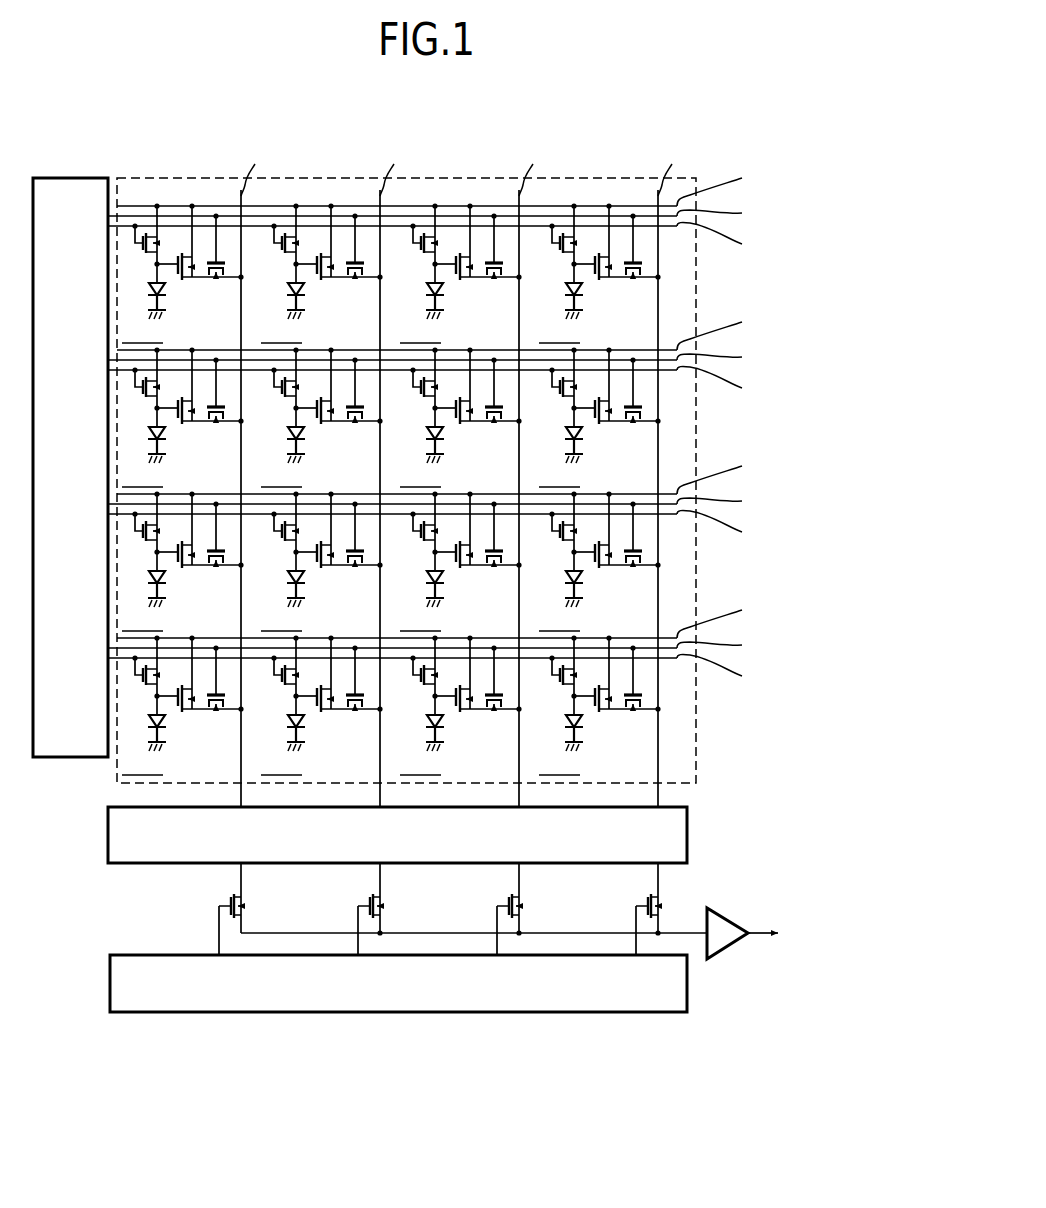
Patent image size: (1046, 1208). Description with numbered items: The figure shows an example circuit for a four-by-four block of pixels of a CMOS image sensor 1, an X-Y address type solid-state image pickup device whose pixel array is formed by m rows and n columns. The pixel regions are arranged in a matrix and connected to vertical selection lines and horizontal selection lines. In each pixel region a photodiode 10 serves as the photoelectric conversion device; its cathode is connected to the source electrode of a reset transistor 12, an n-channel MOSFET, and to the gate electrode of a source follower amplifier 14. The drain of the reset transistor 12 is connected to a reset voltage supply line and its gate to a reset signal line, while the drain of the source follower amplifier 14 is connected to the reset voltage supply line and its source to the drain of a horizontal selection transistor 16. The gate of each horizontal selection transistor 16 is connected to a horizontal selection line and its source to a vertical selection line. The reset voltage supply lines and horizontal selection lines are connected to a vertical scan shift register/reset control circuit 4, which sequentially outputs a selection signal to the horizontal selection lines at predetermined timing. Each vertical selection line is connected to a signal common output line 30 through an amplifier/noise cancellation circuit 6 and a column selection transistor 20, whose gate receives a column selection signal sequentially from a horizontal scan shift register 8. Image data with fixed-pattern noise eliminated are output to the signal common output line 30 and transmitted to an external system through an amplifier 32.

The CMOS image sensor 1 is at (453, 435).
The vertical scan shift register/reset control circuit 4 is at (80, 176).
The amplifier/noise cancellation circuit 6 is at (688, 834).
The horizontal scan shift register 8 is at (110, 979).
The photodiode 10 is at (183, 274).
The reset transistor 12 is at (147, 255).
The source follower amplifier 14 is at (187, 274).
The horizontal selection transistor 16 is at (218, 282).
The column selection transistor 20 is at (661, 903).
The signal common output line 30 is at (695, 937).
The amplifier 32 is at (733, 949).